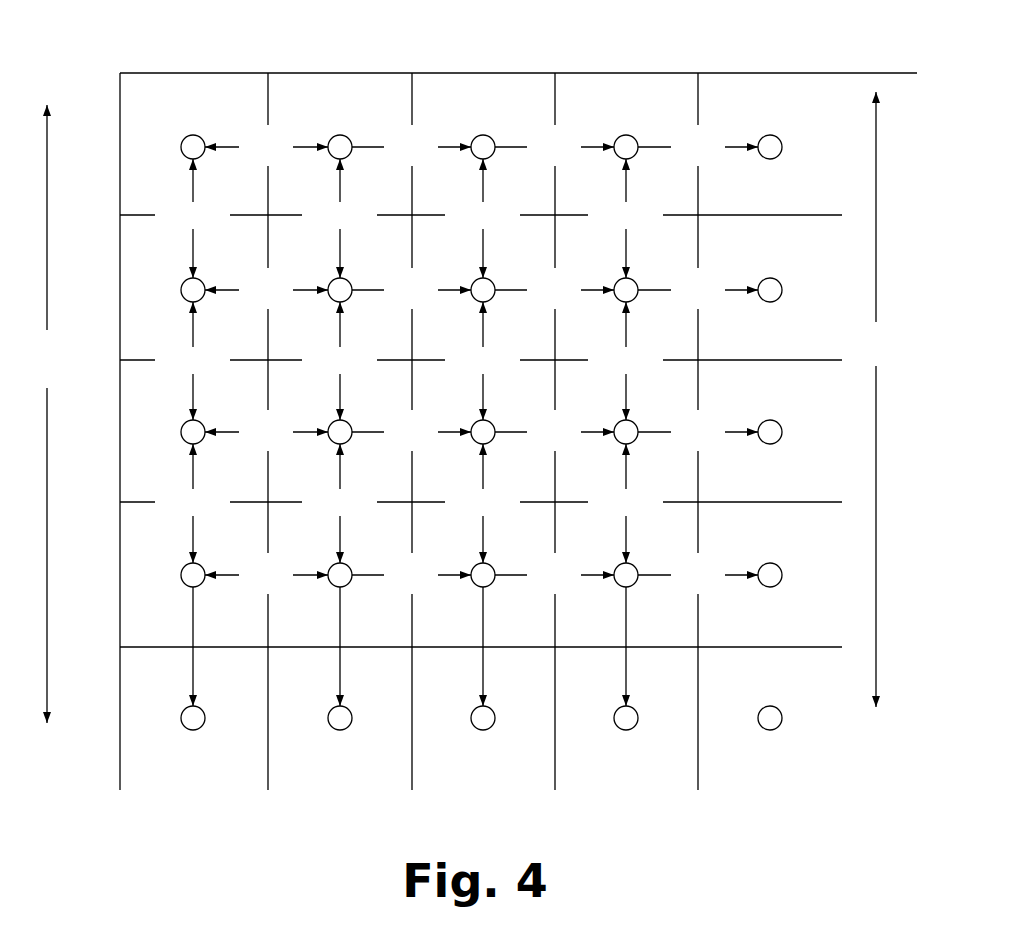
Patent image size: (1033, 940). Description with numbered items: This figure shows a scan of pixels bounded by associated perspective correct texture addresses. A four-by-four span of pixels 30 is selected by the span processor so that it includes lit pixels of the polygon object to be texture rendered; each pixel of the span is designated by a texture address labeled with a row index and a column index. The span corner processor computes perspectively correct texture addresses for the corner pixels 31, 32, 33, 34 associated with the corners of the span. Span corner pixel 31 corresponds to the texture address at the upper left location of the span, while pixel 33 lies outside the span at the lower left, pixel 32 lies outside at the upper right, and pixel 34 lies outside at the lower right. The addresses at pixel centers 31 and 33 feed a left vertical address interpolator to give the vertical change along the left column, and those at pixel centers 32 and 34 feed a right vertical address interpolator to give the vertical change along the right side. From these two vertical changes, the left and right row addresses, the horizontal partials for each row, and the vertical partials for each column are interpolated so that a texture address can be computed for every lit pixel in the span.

The span of pixels 30 is at (477, 404).
The span corner pixel 31 is at (182, 139).
The span corner pixel 32 is at (781, 141).
The span corner pixel 33 is at (192, 731).
The span corner pixel 34 is at (781, 729).